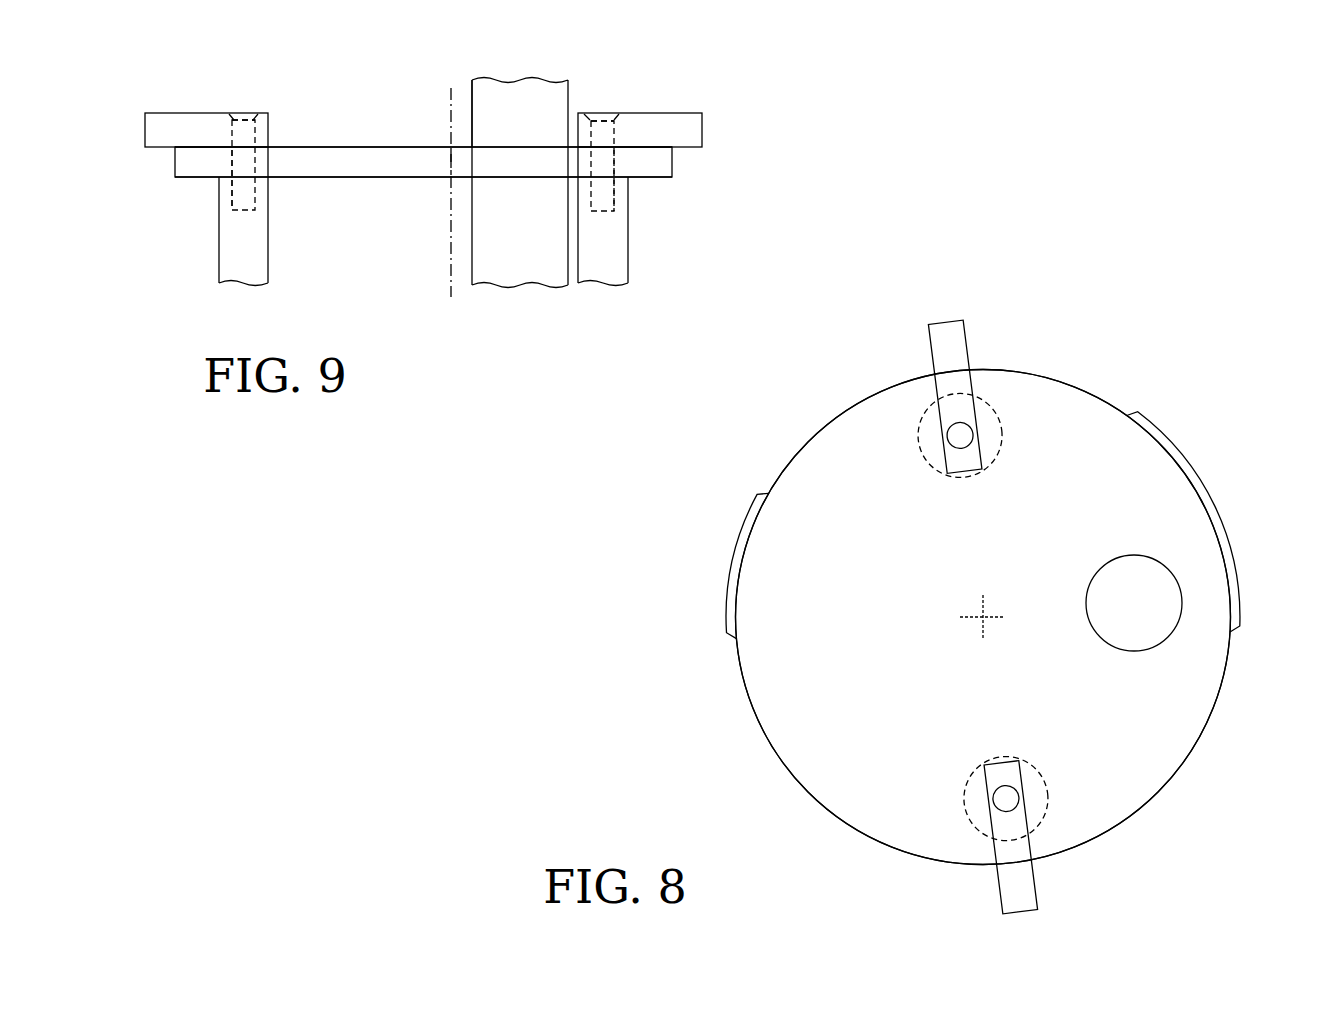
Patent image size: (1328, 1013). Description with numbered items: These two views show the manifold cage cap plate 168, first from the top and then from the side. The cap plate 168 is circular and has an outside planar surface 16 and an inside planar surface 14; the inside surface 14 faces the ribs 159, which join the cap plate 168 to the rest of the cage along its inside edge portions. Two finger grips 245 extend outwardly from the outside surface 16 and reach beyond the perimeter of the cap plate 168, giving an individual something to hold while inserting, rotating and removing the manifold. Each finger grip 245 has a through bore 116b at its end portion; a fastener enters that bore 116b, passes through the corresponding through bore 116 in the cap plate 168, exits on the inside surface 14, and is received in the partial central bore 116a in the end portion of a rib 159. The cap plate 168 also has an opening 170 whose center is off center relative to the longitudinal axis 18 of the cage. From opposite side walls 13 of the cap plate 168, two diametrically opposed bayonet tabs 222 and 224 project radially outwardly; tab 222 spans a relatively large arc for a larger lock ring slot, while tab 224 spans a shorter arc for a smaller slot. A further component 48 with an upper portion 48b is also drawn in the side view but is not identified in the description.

In FIG. 9, the side walls 13 is at (303, 157).
In FIG. 8, the side walls 13 is at (1210, 713).
In FIG. 9, the inside planar surface 14 is at (310, 178).
In FIG. 9, the outside planar surface 16 is at (350, 147).
In FIG. 8, the outside planar surface 16 is at (807, 685).
In FIG. 9, the longitudinal axis 18 is at (450, 92).
In FIG. 8, the longitudinal axis 18 is at (982, 617).
In FIG. 9, the shaft 48 is at (527, 258).
In FIG. 9, the upper portion of shaft 48b is at (497, 90).
In FIG. 9, the through bores 116 is at (240, 157).
In FIG. 9, the central bores 116a is at (245, 196).
In FIG. 9, the through bores 116b is at (237, 112).
In FIG. 8, the through bores 116b is at (967, 435).
In FIG. 9, the ribs 159 is at (232, 217).
In FIG. 8, the ribs 159 is at (928, 425).
In FIG. 9, the cap plate 168 is at (660, 100).
In FIG. 8, the cap plate 168 is at (1160, 422).
In FIG. 9, the opening 170 is at (468, 178).
In FIG. 8, the opening 170 is at (1170, 587).
In FIG. 8, the bayonet tab 222 is at (1188, 455).
In FIG. 8, the bayonet tab 224 is at (742, 517).
In FIG. 9, the finger grips 245 is at (150, 130).
In FIG. 8, the finger grips 245 is at (952, 347).